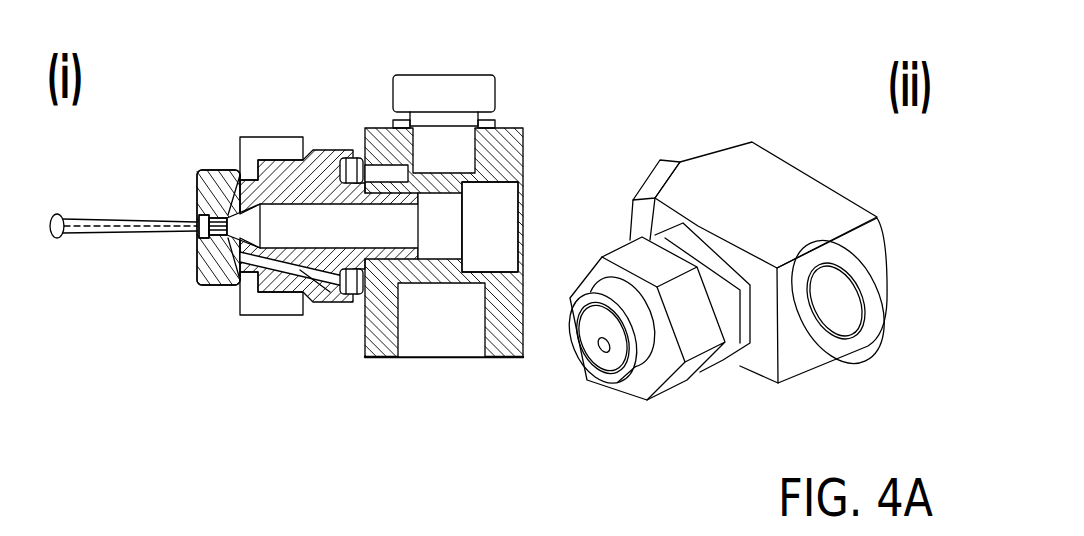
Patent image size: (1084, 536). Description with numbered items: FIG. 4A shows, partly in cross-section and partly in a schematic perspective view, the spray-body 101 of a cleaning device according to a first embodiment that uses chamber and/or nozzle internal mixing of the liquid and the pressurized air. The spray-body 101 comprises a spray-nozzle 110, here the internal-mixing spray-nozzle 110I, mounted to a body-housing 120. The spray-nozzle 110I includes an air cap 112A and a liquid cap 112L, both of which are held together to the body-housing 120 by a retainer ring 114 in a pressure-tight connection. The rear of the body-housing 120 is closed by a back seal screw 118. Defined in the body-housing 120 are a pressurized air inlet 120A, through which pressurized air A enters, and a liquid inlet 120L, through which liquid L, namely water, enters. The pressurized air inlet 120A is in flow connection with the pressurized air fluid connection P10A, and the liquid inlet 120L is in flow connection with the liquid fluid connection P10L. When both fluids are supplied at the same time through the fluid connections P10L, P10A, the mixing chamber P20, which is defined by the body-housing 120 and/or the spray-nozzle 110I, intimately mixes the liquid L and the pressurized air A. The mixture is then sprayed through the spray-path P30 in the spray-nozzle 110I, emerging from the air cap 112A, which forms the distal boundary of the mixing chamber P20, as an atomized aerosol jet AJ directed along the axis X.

The spray-body 101 is at (316, 80).
The spray-nozzle 110 is at (582, 246).
The spray-nozzle 110I is at (215, 138).
The air cap 112A is at (205, 172).
The liquid cap 112L is at (345, 157).
The retainer ring 114 is at (270, 136).
The back seal screw 118 is at (463, 78).
The body-housing 120 is at (510, 360).
The pressurized air inlet 120A is at (410, 358).
The liquid inlet 120L is at (513, 190).
The pressurized air fluid connection P10A is at (324, 300).
The liquid fluid connection P10L is at (265, 300).
The mixing chamber P20 is at (197, 240).
The spray-path P30 is at (197, 220).
The pressurized air A is at (443, 358).
The liquid L is at (546, 231).
The ejection axis X is at (57, 212).
The aerosol jet AJ is at (100, 238).